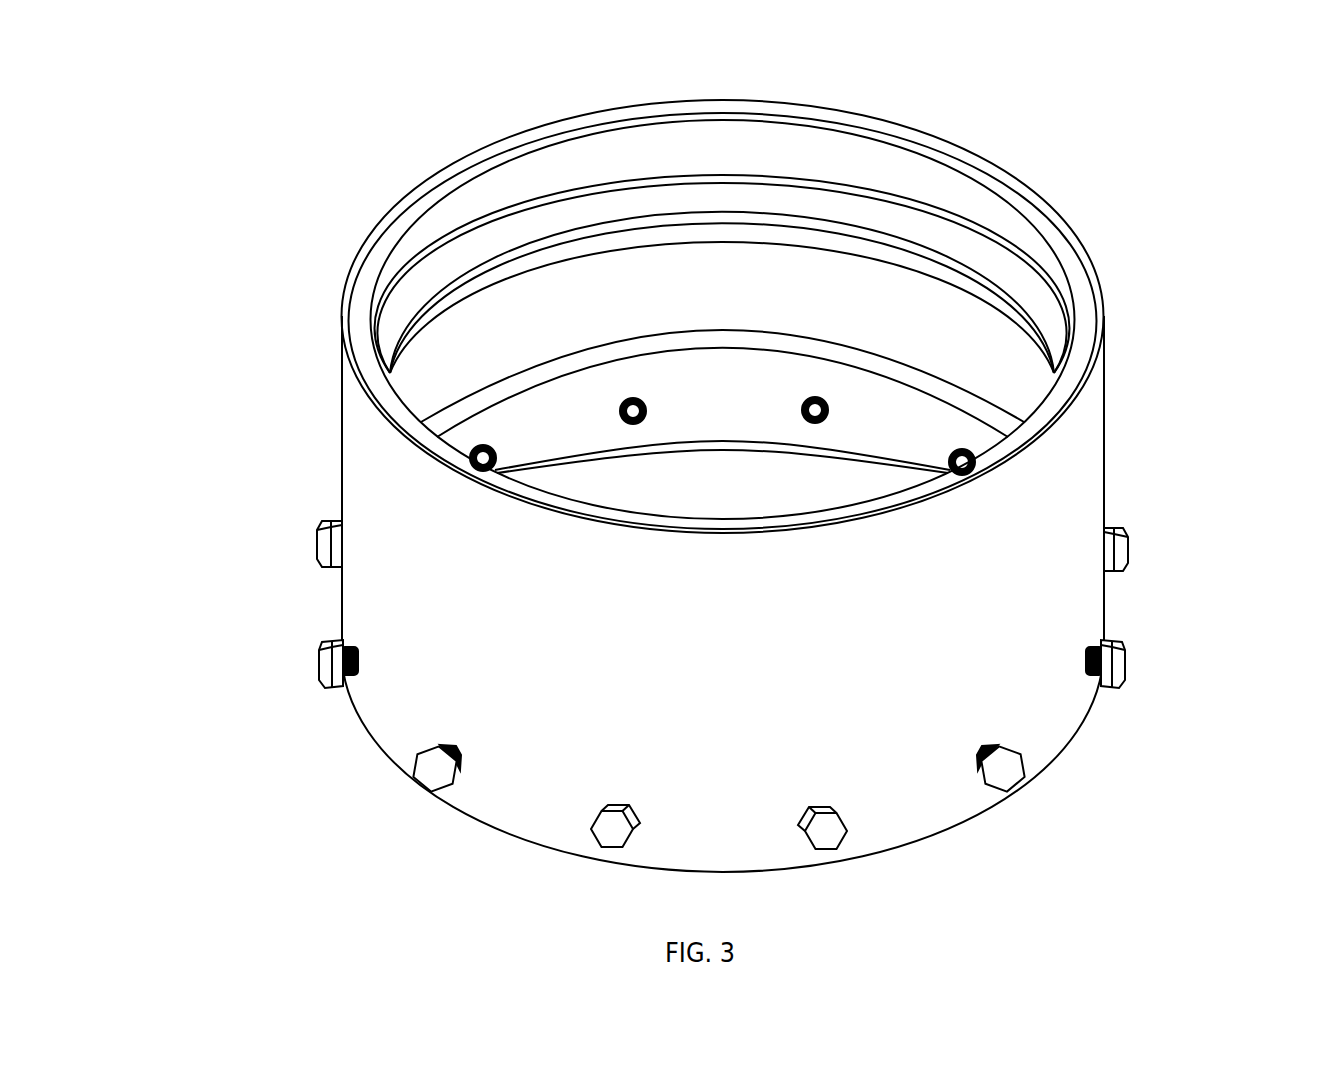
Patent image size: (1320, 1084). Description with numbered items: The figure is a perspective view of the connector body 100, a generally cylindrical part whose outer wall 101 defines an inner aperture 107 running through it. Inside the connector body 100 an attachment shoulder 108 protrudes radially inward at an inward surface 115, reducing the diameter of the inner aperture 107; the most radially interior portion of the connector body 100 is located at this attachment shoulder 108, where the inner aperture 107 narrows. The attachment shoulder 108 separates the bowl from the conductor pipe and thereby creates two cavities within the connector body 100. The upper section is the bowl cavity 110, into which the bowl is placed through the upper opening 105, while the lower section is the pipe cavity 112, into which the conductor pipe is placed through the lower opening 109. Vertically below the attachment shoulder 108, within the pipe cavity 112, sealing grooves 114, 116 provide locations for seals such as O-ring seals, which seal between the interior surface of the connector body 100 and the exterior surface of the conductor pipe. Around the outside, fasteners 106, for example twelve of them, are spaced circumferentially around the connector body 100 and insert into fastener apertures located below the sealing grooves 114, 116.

The connector body 100 is at (1080, 463).
The outer wall 101 is at (1078, 618).
The upper opening 105 is at (822, 162).
The fasteners 106 is at (1123, 662).
The inner aperture 107 is at (592, 480).
The attachment shoulder 108 is at (413, 283).
The lower opening 109 is at (777, 476).
The bowl cavity 110 is at (428, 247).
The pipe cavity 112 is at (915, 425).
The sealing groove 114 is at (570, 255).
The inward surface 115 is at (497, 245).
The sealing groove 116 is at (490, 388).